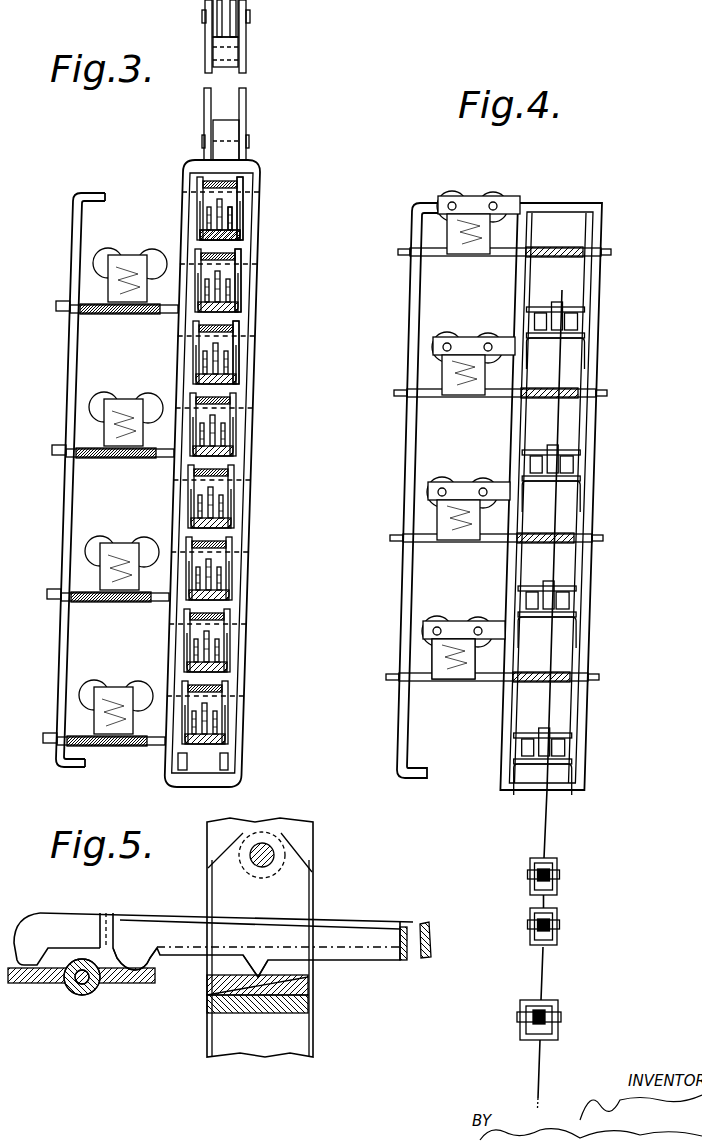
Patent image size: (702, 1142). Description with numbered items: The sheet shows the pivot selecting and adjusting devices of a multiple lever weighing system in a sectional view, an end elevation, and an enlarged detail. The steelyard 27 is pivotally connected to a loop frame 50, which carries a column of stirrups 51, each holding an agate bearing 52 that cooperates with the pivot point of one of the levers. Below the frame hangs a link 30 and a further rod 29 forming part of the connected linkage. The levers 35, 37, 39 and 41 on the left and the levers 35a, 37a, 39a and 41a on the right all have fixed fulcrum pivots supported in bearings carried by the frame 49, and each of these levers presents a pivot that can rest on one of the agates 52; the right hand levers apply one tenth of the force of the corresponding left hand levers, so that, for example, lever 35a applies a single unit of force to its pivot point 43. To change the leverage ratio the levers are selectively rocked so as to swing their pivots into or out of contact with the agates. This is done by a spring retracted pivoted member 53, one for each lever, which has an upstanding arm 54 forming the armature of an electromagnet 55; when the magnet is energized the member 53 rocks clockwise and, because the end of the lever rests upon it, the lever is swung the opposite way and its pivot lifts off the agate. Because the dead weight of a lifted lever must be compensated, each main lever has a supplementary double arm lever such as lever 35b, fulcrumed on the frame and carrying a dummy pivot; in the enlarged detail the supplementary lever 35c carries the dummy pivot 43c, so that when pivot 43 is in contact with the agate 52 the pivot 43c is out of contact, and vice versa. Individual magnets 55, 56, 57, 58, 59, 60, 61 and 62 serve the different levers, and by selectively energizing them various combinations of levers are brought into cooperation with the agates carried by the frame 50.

In FIG. 3, the steelyard 27 is at (247, 111).
In FIG. 4, the lower rod 29 is at (541, 1060).
In FIG. 4, the link 30 is at (546, 977).
In FIG. 3, the lever 35 is at (217, 210).
In FIG. 3, the lever 35a is at (238, 300).
In FIG. 4, the lever 35a is at (564, 306).
In FIG. 5, the lever 35a is at (419, 923).
In FIG. 3, the double arm lever 35b is at (236, 212).
In FIG. 5, the supplementary lever 35c is at (403, 961).
In FIG. 3, the lever 37 is at (214, 352).
In FIG. 3, the lever 37a is at (216, 421).
In FIG. 4, the lever 37a is at (560, 458).
In FIG. 3, the lever 39 is at (209, 498).
In FIG. 3, the lever 39a is at (211, 571).
In FIG. 4, the lever 39a is at (556, 591).
In FIG. 3, the lever 41 is at (204, 634).
In FIG. 3, the lever 41a is at (206, 713).
In FIG. 4, the lever 41a is at (553, 734).
In FIG. 5, the pivot point 43 is at (259, 978).
In FIG. 5, the dummy pivot 43c is at (258, 965).
In FIG. 4, the frame 49 is at (596, 441).
In FIG. 3, the loop frame 50 is at (254, 173).
In FIG. 3, the stirrup 51 is at (244, 222).
In FIG. 5, the stirrup 51 is at (260, 937).
In FIG. 3, the agate bearing 52 is at (241, 240).
In FIG. 5, the agate bearing 52 is at (311, 990).
In FIG. 4, the pivoted member 53 is at (554, 256).
In FIG. 5, the pivoted member 53 is at (110, 986).
In FIG. 4, the upstanding arm 54 is at (463, 680).
In FIG. 4, the electromagnet 55 is at (461, 198).
In FIG. 4, the magnet 56 is at (451, 341).
In FIG. 4, the magnet 57 is at (446, 484).
In FIG. 4, the magnet 58 is at (443, 621).
In FIG. 3, the magnet 59 is at (115, 254).
In FIG. 3, the magnet 60 is at (107, 403).
In FIG. 3, the magnet 61 is at (101, 543).
In FIG. 3, the magnet 62 is at (96, 684).